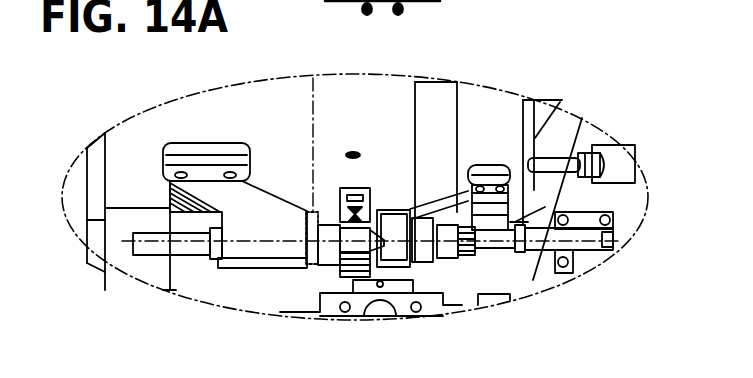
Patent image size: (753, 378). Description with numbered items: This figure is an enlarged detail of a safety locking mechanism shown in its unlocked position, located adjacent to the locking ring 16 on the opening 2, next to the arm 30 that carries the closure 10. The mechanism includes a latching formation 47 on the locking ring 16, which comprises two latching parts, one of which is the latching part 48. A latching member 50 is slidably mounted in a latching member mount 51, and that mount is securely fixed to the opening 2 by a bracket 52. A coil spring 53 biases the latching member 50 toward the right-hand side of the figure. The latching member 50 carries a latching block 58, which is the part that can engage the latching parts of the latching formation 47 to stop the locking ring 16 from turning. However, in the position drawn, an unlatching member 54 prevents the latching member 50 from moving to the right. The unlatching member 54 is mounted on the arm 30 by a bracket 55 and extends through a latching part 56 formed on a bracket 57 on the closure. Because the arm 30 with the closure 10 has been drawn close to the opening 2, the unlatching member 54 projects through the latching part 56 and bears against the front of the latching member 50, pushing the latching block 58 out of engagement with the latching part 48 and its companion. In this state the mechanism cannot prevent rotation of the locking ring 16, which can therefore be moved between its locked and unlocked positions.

The opening 2 is at (236, 100).
The closure 10 is at (485, 103).
The locking ring 16 is at (405, 95).
The arm 30 is at (625, 221).
The latching formation 47 is at (610, 131).
The latching part 48 is at (362, 187).
The latching member 50 is at (320, 268).
The latching member mount 51 is at (221, 262).
The bracket 52 is at (182, 143).
The coil spring 53 is at (320, 226).
The unlatching member 54 is at (425, 256).
The bracket 55 is at (600, 252).
The latching part 56 is at (403, 205).
The bracket 57 is at (545, 207).
The latching block 58 is at (322, 222).